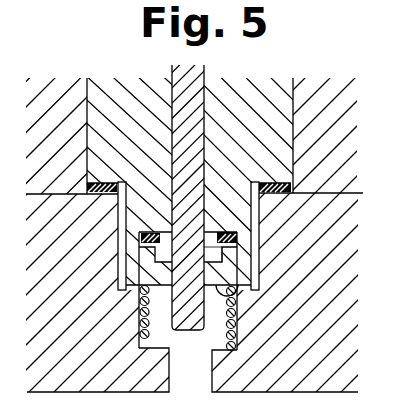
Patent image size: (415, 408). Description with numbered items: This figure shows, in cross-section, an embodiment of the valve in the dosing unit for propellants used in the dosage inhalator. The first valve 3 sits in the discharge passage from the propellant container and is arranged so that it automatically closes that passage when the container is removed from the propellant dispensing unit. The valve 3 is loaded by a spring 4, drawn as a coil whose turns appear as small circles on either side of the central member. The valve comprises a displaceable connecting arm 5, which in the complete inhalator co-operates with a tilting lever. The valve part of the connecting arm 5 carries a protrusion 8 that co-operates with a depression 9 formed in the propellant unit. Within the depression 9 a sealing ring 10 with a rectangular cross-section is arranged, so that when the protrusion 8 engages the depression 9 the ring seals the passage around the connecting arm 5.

The first valve 3 is at (204, 315).
The spring 4 is at (237, 342).
The connecting arm 5 is at (204, 125).
The protrusion 8 is at (238, 302).
The depression 9 is at (239, 230).
The sealing ring 10 is at (240, 242).